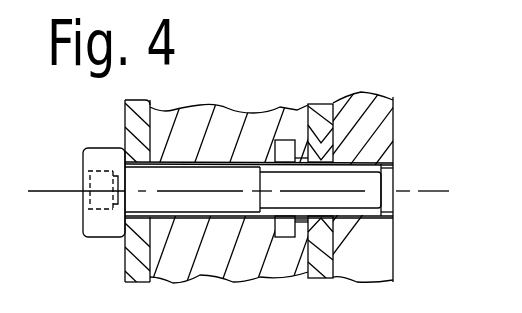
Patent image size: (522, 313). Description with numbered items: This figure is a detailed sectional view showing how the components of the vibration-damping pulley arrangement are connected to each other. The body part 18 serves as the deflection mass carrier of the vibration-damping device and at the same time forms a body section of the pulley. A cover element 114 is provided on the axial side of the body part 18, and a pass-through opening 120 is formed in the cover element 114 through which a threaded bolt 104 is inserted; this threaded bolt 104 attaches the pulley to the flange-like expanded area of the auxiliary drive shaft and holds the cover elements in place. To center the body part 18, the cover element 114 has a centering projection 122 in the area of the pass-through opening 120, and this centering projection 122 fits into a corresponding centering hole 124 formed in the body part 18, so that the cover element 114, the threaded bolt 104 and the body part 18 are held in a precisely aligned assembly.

The body part 18 is at (193, 117).
The threaded bolt 104 is at (84, 181).
The cover element 114 is at (323, 110).
The pass-through opening 120 is at (322, 155).
The centering projection 122 is at (298, 219).
The centering hole 124 is at (288, 147).